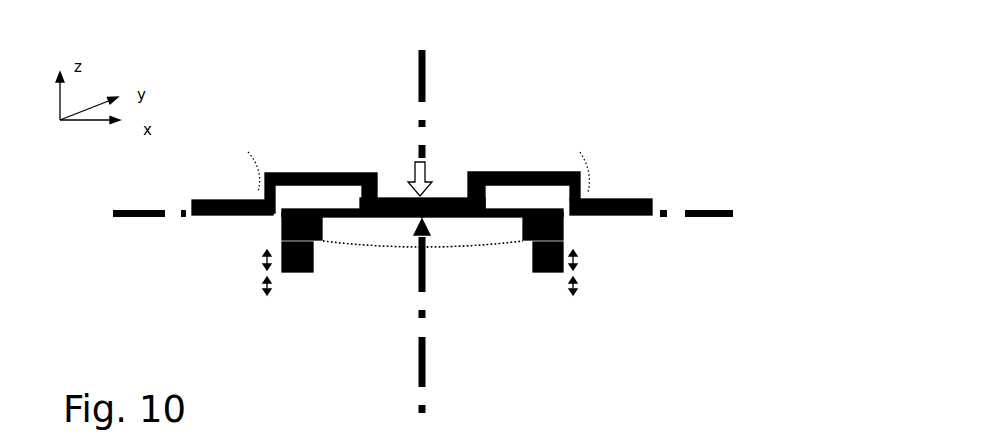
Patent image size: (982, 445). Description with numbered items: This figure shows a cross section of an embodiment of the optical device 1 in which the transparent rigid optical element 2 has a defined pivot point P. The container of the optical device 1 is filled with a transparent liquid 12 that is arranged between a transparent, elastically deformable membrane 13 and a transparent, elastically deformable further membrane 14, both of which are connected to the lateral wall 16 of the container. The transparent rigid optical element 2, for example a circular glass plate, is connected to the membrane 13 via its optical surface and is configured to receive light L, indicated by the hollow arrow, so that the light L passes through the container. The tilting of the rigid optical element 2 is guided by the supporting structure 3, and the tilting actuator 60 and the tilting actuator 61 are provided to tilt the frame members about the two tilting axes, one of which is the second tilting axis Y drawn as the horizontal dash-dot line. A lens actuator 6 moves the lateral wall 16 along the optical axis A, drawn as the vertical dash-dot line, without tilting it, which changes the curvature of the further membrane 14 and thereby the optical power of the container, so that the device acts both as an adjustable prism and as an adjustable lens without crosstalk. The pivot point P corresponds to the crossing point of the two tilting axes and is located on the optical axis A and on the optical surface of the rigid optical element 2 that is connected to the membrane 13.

The optical device 1 is at (608, 115).
The transparent rigid optical element 2 is at (440, 198).
The supporting structure 3 is at (527, 165).
The lens actuator 6 is at (580, 260).
The transparent liquid 12 is at (398, 232).
The membrane 13 is at (345, 208).
The further membrane 14 is at (360, 243).
The lateral wall 16 is at (565, 226).
The tilting actuator 60 is at (588, 163).
The tilting actuator 61 is at (248, 158).
The optical axis A is at (410, 82).
The second tilting axis Y is at (746, 213).
The light L is at (426, 168).
The pivot point P is at (426, 240).